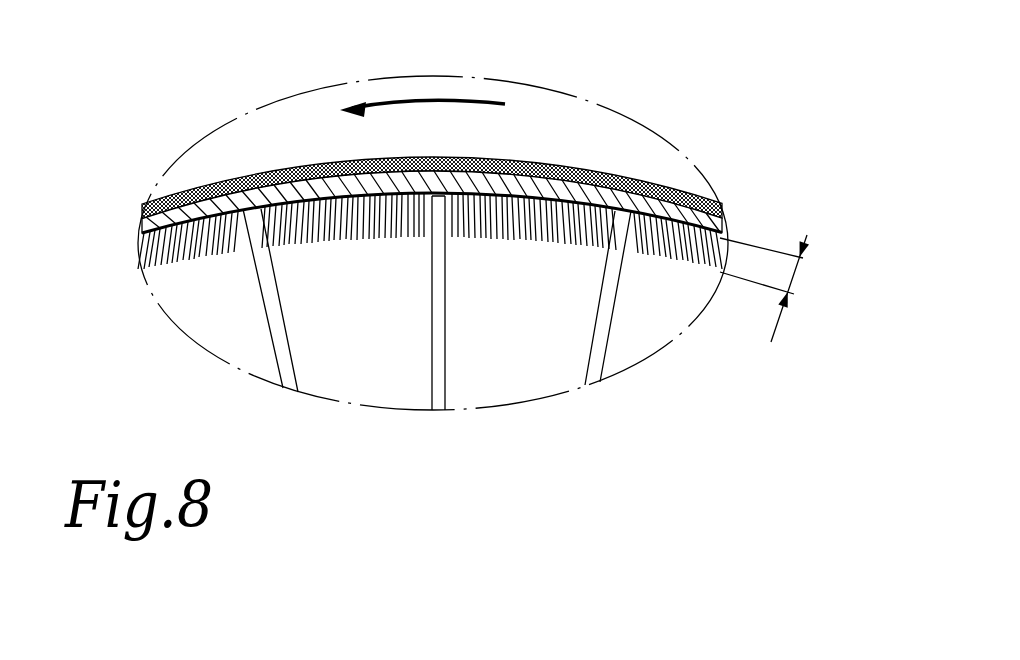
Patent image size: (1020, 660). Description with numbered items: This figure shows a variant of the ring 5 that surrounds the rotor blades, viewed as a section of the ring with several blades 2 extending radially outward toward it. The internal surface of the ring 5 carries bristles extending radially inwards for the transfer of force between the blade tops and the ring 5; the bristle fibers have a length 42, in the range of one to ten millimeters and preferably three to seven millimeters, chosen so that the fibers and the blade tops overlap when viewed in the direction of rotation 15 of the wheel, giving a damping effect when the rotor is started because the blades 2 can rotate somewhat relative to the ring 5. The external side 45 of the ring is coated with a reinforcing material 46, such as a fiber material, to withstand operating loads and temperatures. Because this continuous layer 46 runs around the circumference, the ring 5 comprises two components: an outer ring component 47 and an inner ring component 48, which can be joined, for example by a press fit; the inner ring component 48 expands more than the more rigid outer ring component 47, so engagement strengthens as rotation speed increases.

The blade 2 is at (283, 328).
The ring 5 is at (500, 243).
The direction of rotation 15 is at (418, 98).
The length of the bristle fibers 42 is at (794, 273).
The external side of the ring 45 is at (626, 172).
The reinforcing material 46 is at (195, 172).
The outer ring component 47 is at (521, 160).
The inner ring component 48 is at (266, 173).